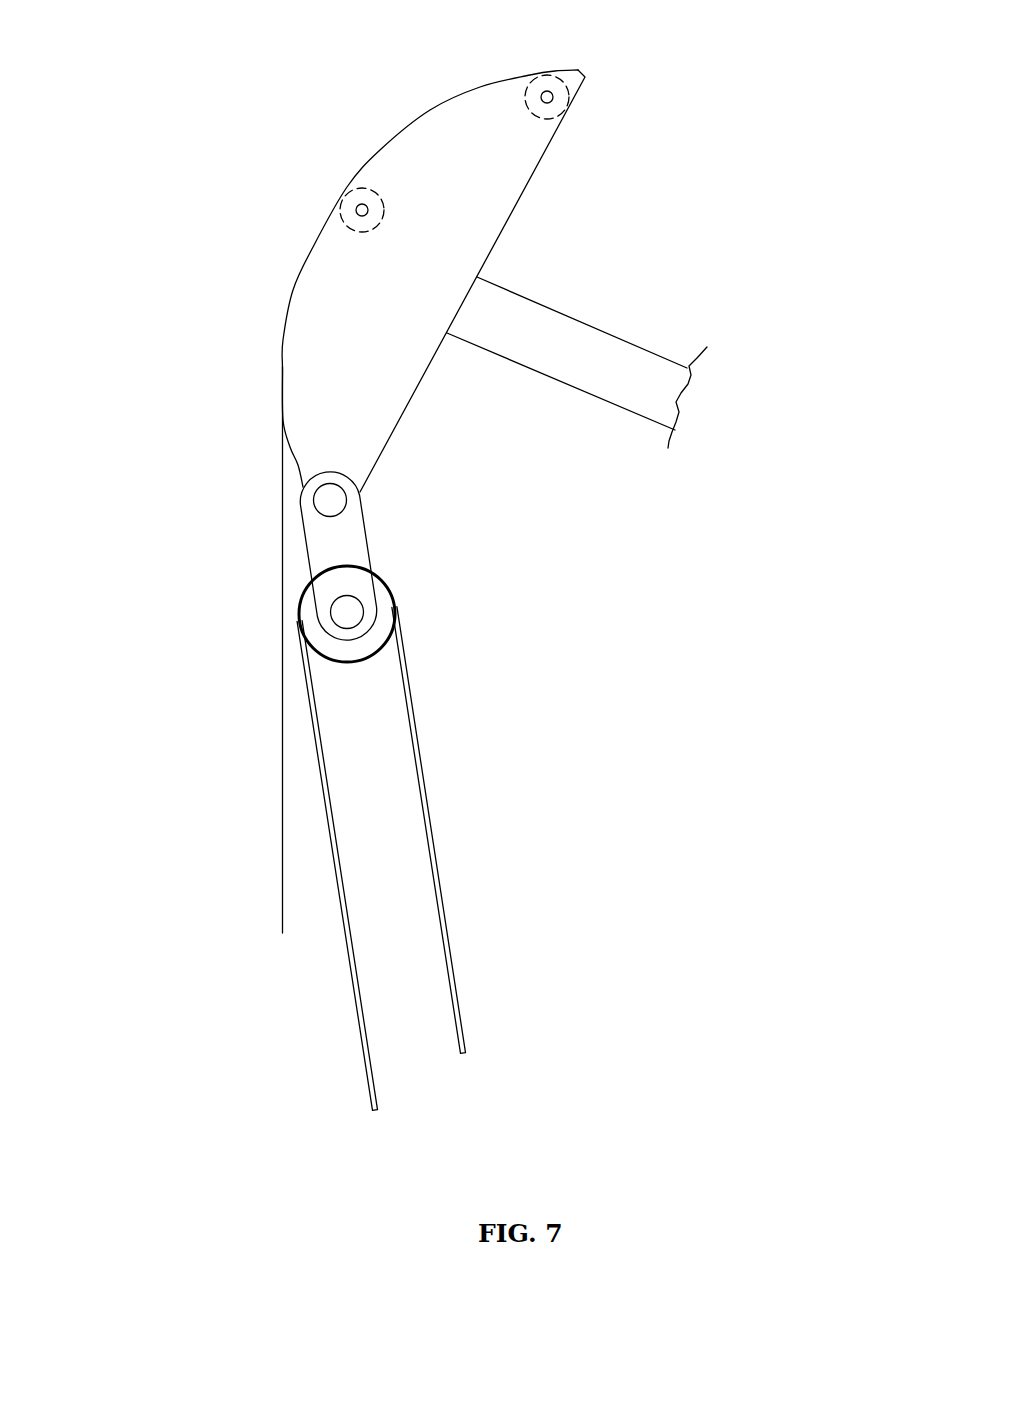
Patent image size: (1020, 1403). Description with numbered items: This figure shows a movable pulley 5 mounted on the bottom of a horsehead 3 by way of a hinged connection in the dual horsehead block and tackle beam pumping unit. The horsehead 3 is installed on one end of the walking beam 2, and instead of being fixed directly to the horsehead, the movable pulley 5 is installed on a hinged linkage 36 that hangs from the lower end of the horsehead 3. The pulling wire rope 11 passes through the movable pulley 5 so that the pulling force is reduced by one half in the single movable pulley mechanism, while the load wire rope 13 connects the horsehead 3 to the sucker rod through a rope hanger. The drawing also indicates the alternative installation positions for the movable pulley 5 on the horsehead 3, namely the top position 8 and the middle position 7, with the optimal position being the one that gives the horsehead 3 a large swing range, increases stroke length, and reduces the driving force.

The walking beam 2 is at (570, 348).
The horsehead 3 is at (495, 168).
The movable pulley 5 is at (352, 652).
The middle position 7 is at (341, 213).
The top position 8 is at (552, 85).
The pulling wire rope 11 is at (352, 985).
The load wire rope 13 is at (282, 822).
The hinged linkage 36 is at (343, 547).